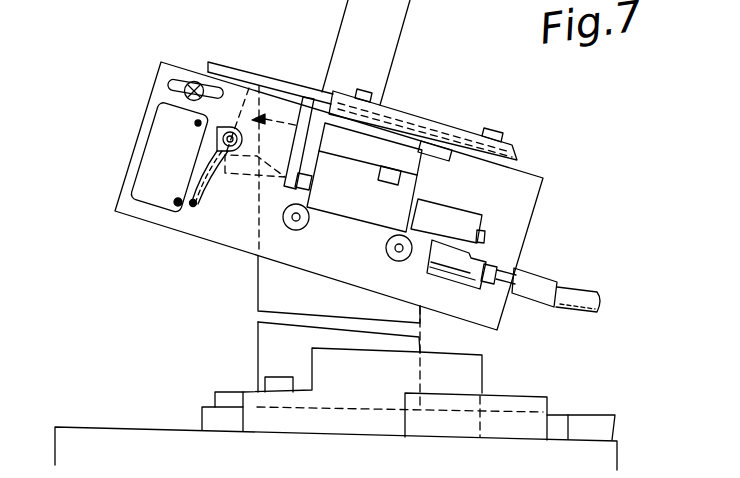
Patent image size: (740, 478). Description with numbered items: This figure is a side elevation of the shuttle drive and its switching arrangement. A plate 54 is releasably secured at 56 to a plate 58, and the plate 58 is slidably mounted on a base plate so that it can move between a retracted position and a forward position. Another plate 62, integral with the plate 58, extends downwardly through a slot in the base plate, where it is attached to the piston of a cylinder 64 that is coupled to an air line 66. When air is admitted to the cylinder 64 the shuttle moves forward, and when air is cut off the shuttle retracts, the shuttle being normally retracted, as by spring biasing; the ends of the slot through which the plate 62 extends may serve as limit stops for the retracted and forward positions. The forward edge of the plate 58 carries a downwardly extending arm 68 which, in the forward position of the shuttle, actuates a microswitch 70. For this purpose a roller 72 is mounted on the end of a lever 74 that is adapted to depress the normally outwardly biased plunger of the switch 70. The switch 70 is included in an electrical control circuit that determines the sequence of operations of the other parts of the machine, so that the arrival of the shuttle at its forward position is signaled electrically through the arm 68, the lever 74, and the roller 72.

The plate 54 is at (520, 146).
The releasable securement 56 is at (483, 128).
The plate 58 is at (305, 100).
The plate 62 is at (424, 154).
The cylinder 64 is at (466, 212).
The air line 66 is at (577, 292).
The arm 68 is at (286, 183).
The microswitch 70 is at (180, 166).
The roller 72 is at (236, 127).
The lever 74 is at (207, 186).